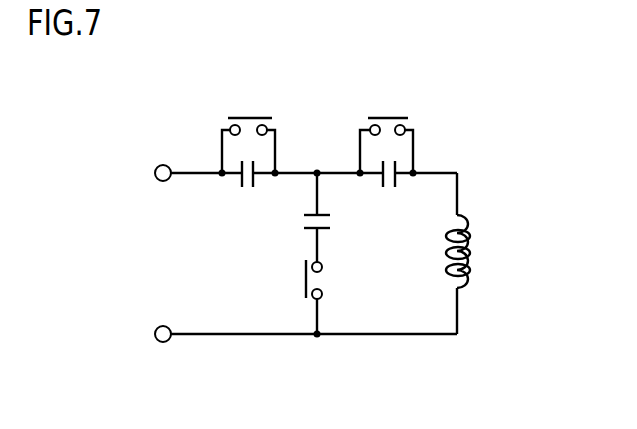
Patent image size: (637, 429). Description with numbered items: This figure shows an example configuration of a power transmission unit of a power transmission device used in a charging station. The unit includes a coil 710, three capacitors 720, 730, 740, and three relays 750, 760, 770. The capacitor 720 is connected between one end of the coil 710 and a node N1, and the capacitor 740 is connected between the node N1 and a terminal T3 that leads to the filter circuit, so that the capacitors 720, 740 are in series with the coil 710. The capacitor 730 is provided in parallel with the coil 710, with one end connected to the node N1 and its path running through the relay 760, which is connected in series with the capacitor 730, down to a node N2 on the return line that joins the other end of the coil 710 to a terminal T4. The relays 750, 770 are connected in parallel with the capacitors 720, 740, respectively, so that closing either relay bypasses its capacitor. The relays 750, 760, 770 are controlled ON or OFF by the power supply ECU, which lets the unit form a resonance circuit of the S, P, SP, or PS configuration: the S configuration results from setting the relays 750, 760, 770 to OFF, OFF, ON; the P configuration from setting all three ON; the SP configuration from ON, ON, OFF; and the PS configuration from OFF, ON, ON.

The coil 710 is at (478, 256).
The capacitor 720 is at (388, 188).
The capacitor 730 is at (330, 223).
The capacitor 740 is at (248, 193).
The relay 750 is at (388, 113).
The relay 760 is at (303, 283).
The relay 770 is at (247, 113).
The node N1 is at (317, 163).
The node N2 is at (317, 343).
The terminal T3 is at (155, 173).
The terminal T4 is at (155, 334).